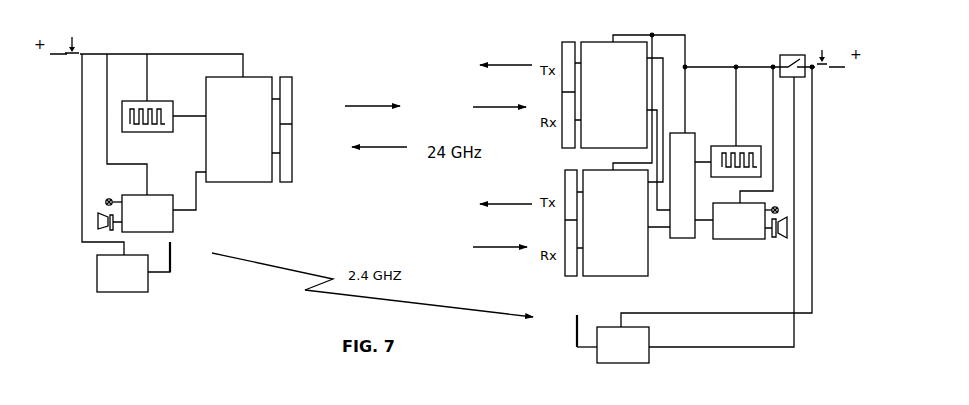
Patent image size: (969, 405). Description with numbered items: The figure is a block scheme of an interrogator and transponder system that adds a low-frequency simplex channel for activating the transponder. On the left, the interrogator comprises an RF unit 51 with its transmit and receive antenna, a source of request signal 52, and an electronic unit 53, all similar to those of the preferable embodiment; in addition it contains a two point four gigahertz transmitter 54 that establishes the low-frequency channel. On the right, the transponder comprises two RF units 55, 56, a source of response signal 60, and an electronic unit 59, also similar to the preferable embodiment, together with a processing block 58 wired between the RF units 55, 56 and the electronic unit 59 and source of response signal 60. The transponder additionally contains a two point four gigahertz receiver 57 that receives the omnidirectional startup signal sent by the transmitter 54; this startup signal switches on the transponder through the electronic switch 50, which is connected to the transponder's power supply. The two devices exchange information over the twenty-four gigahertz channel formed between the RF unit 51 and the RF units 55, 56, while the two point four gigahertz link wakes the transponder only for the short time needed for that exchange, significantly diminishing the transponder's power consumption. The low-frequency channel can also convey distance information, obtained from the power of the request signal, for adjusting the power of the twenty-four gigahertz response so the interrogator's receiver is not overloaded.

The electronic switch 50 is at (787, 51).
The RF unit 51 is at (261, 73).
The source of request signal 52 is at (160, 96).
The electronic unit 53 is at (154, 193).
The 2.4 GHz transmitter 54 is at (92, 283).
The RF unit 55 is at (595, 38).
The RF unit 56 is at (576, 166).
The 2.4 GHz receiver 57 is at (640, 320).
The processing unit 58 is at (690, 127).
The electronic unit 59 is at (730, 243).
The source of response signal 60 is at (744, 141).